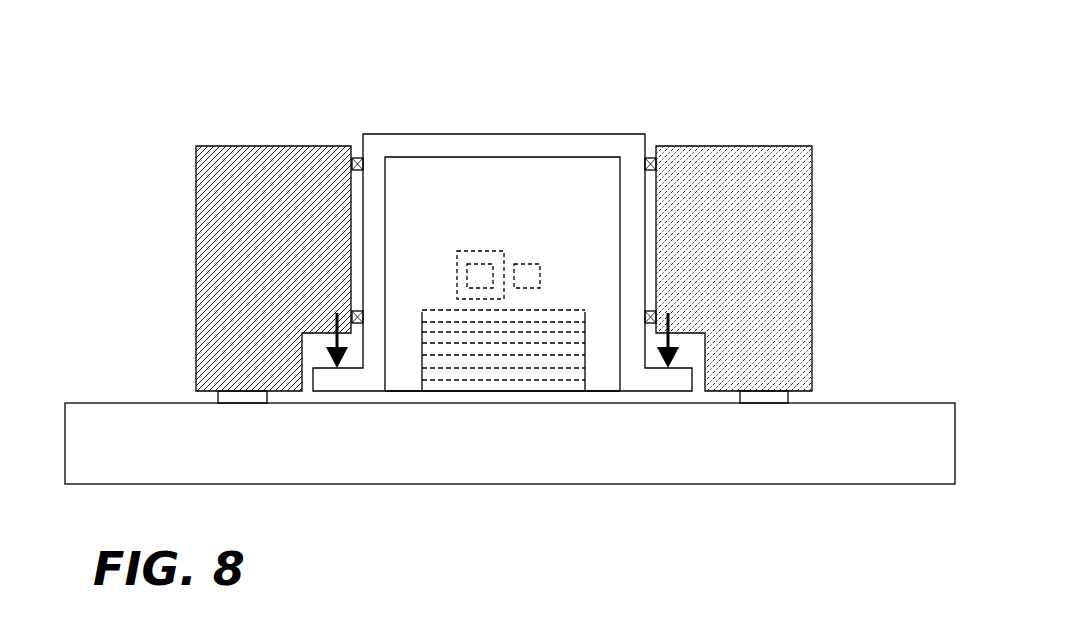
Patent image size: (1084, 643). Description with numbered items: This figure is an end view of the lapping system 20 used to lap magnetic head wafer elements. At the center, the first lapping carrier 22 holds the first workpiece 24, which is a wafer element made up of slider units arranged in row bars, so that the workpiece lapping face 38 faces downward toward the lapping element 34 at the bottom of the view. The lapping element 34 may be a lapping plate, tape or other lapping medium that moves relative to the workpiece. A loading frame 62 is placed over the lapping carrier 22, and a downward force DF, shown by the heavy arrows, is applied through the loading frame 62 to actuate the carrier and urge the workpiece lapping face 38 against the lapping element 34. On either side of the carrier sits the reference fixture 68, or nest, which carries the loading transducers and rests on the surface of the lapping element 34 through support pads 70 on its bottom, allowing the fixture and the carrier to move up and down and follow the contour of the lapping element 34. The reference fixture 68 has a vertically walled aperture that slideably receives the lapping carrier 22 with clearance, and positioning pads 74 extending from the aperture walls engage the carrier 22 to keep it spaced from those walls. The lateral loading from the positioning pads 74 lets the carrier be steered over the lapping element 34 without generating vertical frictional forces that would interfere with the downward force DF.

The lapping system 20 is at (186, 26).
The first lapping carrier 22 is at (620, 217).
The first workpiece 24 is at (457, 402).
The lapping element 34 is at (80, 402).
The workpiece lapping face 38 is at (548, 403).
The loading frame 62 is at (515, 134).
The reference fixture 68 is at (196, 203).
The support pads 70 is at (242, 398).
The positioning pads 74 is at (345, 316).
The downward force DF is at (335, 320).